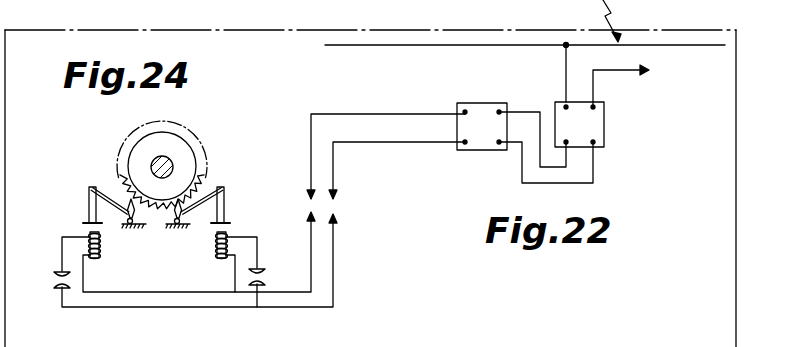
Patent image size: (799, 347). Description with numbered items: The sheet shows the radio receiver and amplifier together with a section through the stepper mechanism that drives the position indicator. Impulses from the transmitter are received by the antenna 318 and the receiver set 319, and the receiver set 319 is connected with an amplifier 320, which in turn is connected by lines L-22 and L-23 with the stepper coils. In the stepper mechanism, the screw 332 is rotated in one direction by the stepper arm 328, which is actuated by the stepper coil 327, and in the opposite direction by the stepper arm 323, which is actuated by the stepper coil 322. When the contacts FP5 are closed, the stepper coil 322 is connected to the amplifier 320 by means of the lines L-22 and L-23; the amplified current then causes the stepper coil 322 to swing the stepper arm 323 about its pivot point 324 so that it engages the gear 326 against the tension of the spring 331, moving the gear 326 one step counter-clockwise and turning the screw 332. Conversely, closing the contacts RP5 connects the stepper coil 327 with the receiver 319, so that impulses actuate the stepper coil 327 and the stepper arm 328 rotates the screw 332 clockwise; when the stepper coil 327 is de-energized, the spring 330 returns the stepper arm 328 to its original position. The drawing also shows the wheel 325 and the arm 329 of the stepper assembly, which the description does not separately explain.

In FIG. 22, the antenna 318 is at (443, 50).
In FIG. 22, the receiver set 319 is at (602, 127).
In FIG. 22, the amplifier 320 is at (494, 142).
In FIG. 24, the stepper coil 322 is at (216, 248).
In FIG. 24, the stepper arm 323 is at (223, 188).
In FIG. 24, the pivot point 324 is at (200, 200).
In FIG. 24, the ratchet wheel 325 is at (128, 143).
In FIG. 24, the gear 326 is at (180, 135).
In FIG. 24, the stepper coil 327 is at (101, 248).
In FIG. 24, the stepper arm 328 is at (91, 190).
In FIG. 24, the pawl arm 329 is at (112, 199).
In FIG. 24, the spring 330 is at (127, 222).
In FIG. 24, the spring 331 is at (172, 224).
In FIG. 24, the screw 332 is at (153, 165).
In FIG. 24, the line L-22 is at (311, 247).
In FIG. 22, the line L-22 is at (311, 141).
In FIG. 24, the line L-23 is at (337, 265).
In FIG. 22, the line L-23 is at (397, 170).
In FIG. 24, the contacts RP5 is at (45, 283).
In FIG. 24, the contacts FP5 is at (270, 277).